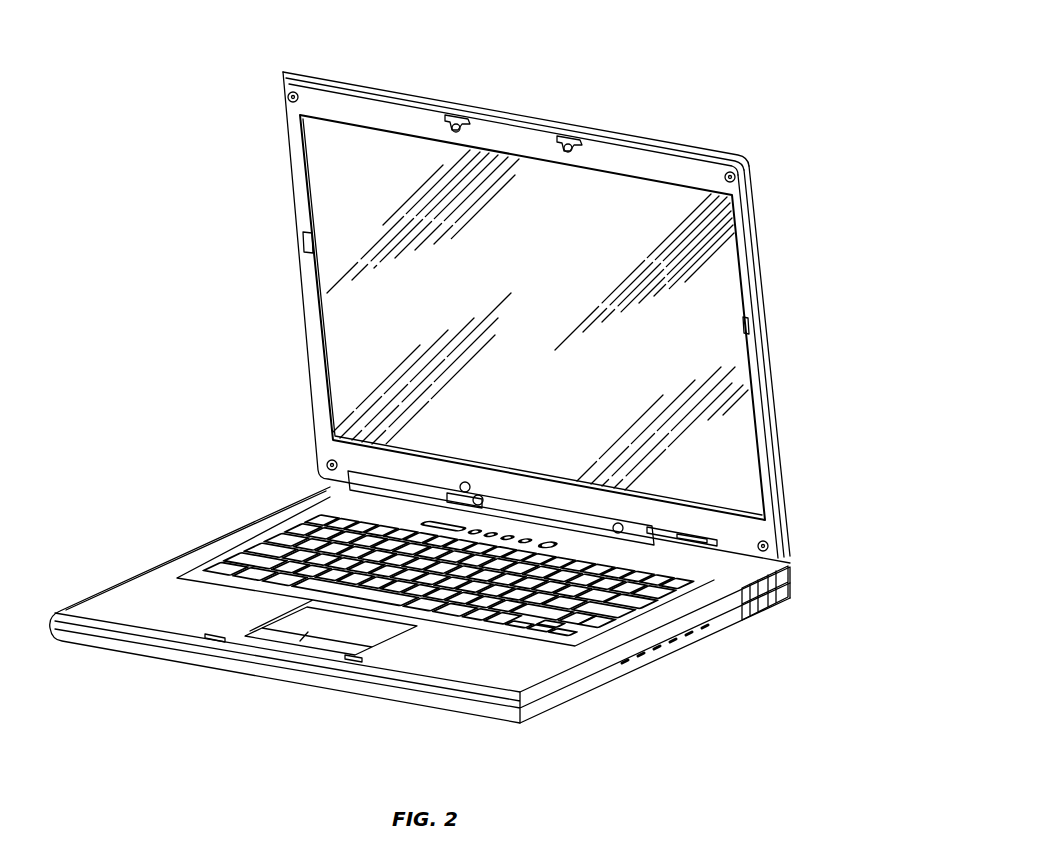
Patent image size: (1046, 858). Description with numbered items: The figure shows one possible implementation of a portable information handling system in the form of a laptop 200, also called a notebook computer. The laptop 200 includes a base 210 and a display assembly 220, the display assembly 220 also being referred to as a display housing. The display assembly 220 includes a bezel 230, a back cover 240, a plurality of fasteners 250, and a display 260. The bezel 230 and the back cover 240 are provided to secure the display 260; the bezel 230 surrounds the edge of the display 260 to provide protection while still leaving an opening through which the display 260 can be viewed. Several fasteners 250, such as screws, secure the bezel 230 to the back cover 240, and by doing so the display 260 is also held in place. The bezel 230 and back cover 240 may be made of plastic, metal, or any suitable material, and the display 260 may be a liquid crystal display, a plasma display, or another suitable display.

The laptop 200 is at (704, 44).
The base 210 is at (616, 718).
The display assembly 220 is at (255, 219).
The bezel 230 is at (311, 372).
The back cover 240 is at (332, 80).
The fasteners 250 is at (288, 96).
The display 260 is at (731, 296).